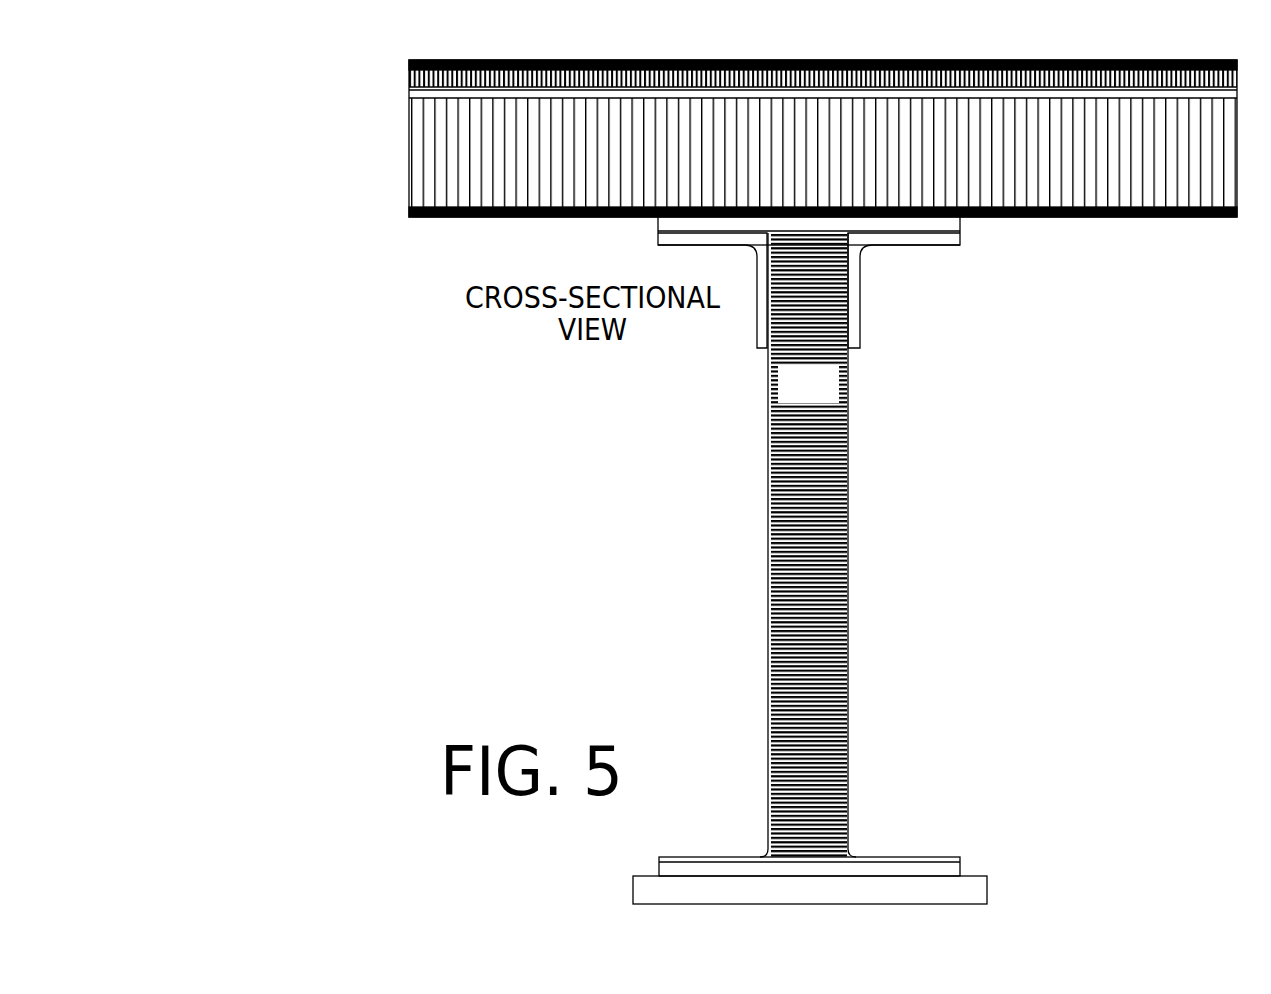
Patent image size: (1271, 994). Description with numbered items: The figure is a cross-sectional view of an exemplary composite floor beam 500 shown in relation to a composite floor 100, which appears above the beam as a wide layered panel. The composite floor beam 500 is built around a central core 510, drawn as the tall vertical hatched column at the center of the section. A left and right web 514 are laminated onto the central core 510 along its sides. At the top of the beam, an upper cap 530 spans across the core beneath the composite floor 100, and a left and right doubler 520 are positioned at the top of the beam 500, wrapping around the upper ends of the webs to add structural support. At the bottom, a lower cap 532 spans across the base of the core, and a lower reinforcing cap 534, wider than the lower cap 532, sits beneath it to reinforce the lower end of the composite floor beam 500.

The composite floor 100 is at (322, 65).
The composite floor beam 500 is at (804, 562).
The central core 510 is at (808, 384).
The left and right web 514 is at (853, 418).
The left and right doubler 520 is at (862, 307).
The upper cap 530 is at (962, 221).
The lower cap 532 is at (962, 863).
The lower reinforcing cap 534 is at (989, 887).